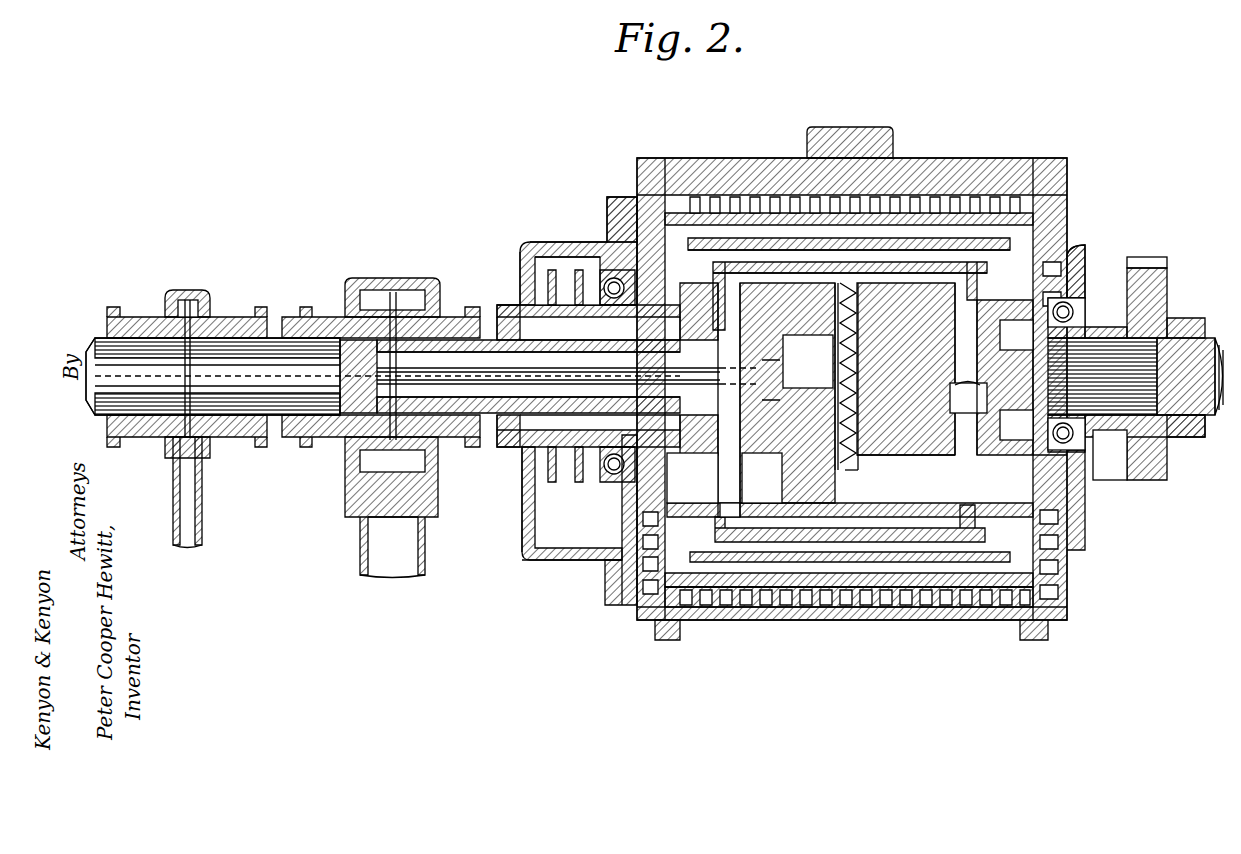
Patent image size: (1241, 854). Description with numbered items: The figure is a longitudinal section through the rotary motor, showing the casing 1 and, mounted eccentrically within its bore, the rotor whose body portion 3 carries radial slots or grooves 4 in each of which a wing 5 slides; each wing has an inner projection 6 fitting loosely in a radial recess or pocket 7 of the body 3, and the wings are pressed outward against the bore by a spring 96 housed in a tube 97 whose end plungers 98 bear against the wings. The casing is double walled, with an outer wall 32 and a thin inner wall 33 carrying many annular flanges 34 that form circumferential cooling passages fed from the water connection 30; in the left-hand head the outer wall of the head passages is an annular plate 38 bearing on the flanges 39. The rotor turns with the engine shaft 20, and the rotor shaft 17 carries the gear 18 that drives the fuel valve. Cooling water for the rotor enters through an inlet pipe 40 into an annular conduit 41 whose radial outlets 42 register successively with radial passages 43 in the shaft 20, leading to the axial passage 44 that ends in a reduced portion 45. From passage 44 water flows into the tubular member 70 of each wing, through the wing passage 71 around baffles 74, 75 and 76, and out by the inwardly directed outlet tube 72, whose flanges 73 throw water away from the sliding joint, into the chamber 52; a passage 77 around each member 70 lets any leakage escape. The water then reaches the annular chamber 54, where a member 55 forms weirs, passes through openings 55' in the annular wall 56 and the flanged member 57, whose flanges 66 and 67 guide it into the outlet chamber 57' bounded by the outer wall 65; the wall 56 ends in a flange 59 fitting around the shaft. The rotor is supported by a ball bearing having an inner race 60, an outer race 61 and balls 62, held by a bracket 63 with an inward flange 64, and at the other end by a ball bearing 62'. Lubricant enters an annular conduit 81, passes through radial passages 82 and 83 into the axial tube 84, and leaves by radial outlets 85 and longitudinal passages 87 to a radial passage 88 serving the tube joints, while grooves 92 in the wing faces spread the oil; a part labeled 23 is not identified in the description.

The casing 1 is at (728, 160).
The body portion 3 is at (765, 320).
The radial slots or grooves 4 is at (1030, 480).
The wing 5 is at (910, 503).
The projection 6 is at (948, 420).
The radial recess or pocket 7 is at (935, 455).
The shaft of the rotor 17 is at (1214, 335).
The gear 18 is at (1150, 262).
The engine shaft 20 is at (285, 430).
The driving shaft 23 is at (225, 428).
The connection 30 is at (190, 515).
The outer wall 32 is at (862, 610).
The wall 33 is at (975, 610).
The annular flanges 34 is at (810, 608).
The annular plate 38 is at (612, 585).
The flanges 39 is at (655, 598).
The inlet pipe 40 is at (380, 555).
The annular conduit 41 is at (430, 300).
The radial outlets 42 is at (393, 430).
The radial passages 43 is at (360, 300).
The longitudinal axial passage 44 is at (505, 420).
The portion of reduced diameter 45 is at (762, 478).
The chamber 52 is at (1149, 379).
The annular chamber 54 is at (510, 440).
The member 55 is at (594, 307).
The openings 55' is at (501, 500).
The annular outer wall 56 is at (630, 495).
The flanged member 57 is at (500, 257).
The outlet chamber 57' is at (547, 559).
The flange 59 is at (505, 300).
The inner race 60 is at (615, 200).
The outer race 61 is at (610, 248).
The balls or anti-friction members 62 is at (595, 397).
The ball bearing 62' is at (1087, 386).
The bracket 63 is at (600, 565).
The flange 64 is at (570, 255).
The outer wall 65 is at (522, 470).
The annular flange 66 is at (528, 275).
The annular flange 67 is at (540, 245).
The tubular portion or member 70 is at (718, 470).
The passage 71 is at (760, 560).
The outlet tube 72 is at (1010, 470).
The outwardly directed flanges 73 is at (1212, 440).
The baffle 74 is at (725, 560).
The baffle 75 is at (915, 560).
The baffle 76 is at (945, 560).
The passage 77 is at (690, 455).
The annular conduit 81 is at (190, 302).
The radial passages 82 is at (186, 320).
The radial passages 83 is at (205, 440).
The longitudinal tube or pipe 84 is at (450, 365).
The radial outlet portions 85 is at (680, 393).
The passages 87 is at (1020, 425).
The radial passage 88 is at (1085, 262).
The grooves 92 is at (870, 283).
The spring 96 is at (840, 283).
The tube 97 is at (838, 462).
The plungers 98 is at (846, 480).